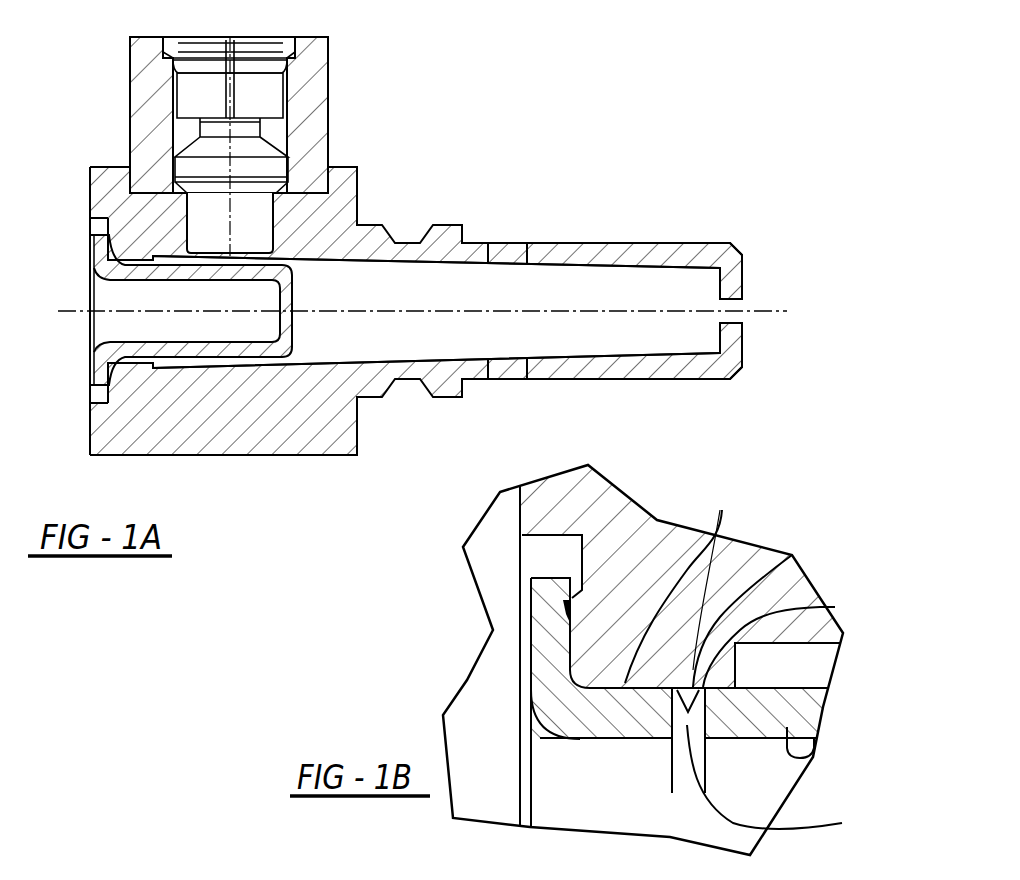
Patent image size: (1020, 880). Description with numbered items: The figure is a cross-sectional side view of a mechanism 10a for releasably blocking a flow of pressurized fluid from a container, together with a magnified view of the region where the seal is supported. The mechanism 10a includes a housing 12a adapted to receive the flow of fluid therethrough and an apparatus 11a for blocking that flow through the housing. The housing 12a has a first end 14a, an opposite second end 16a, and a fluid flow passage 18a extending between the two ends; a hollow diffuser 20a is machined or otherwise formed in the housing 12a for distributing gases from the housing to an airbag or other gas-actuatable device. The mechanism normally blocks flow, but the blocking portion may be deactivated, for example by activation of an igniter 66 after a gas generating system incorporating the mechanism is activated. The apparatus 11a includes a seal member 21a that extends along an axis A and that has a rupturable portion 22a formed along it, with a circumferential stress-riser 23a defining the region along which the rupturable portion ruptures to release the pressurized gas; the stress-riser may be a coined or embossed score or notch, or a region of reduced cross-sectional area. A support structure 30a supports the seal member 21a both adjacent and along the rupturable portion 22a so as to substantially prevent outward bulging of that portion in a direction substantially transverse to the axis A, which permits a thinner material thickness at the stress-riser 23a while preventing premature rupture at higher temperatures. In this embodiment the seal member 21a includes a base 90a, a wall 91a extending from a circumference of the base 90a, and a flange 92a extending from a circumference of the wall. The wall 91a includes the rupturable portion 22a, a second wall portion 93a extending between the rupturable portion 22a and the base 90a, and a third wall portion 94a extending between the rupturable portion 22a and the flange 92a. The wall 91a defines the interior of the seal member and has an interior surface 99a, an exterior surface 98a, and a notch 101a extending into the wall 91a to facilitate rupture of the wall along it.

In FIG. 1A, the igniter 66 is at (217, 36).
In FIG. 1A, the housing 12a is at (358, 163).
In FIG. 1B, the housing 12a is at (517, 530).
In FIG. 1A, the fluid flow passage 18a is at (408, 278).
In FIG. 1A, the hollow diffuser 20a is at (593, 243).
In FIG. 1A, the mechanism 10a is at (861, 180).
In FIG. 1A, the axis A is at (771, 311).
In FIG. 1A, the base 90a is at (293, 286).
In FIG. 1A, the seal member 21a is at (296, 327).
In FIG. 1A, the wall 91a is at (227, 354).
In FIG. 1A, the first end 14a is at (113, 437).
In FIG. 1A, the second end 16a is at (356, 440).
In FIG. 1B, the apparatus for blocking the flow of fluid 11a is at (410, 705).
In FIG. 1B, the flange 92a is at (547, 623).
In FIG. 1B, the third wall portion 94a is at (607, 715).
In FIG. 1B, the interior surface 99a is at (637, 740).
In FIG. 1B, the exterior surface 98a is at (722, 510).
In FIG. 1B, the support structure 30a is at (792, 555).
In FIG. 1B, the notch 101a is at (835, 607).
In FIG. 1B, the second wall portion 93a is at (803, 758).
In FIG. 1B, the rupturable portion 22a is at (643, 777).
In FIG. 1B, the circumferential stress-riser 23a is at (782, 781).